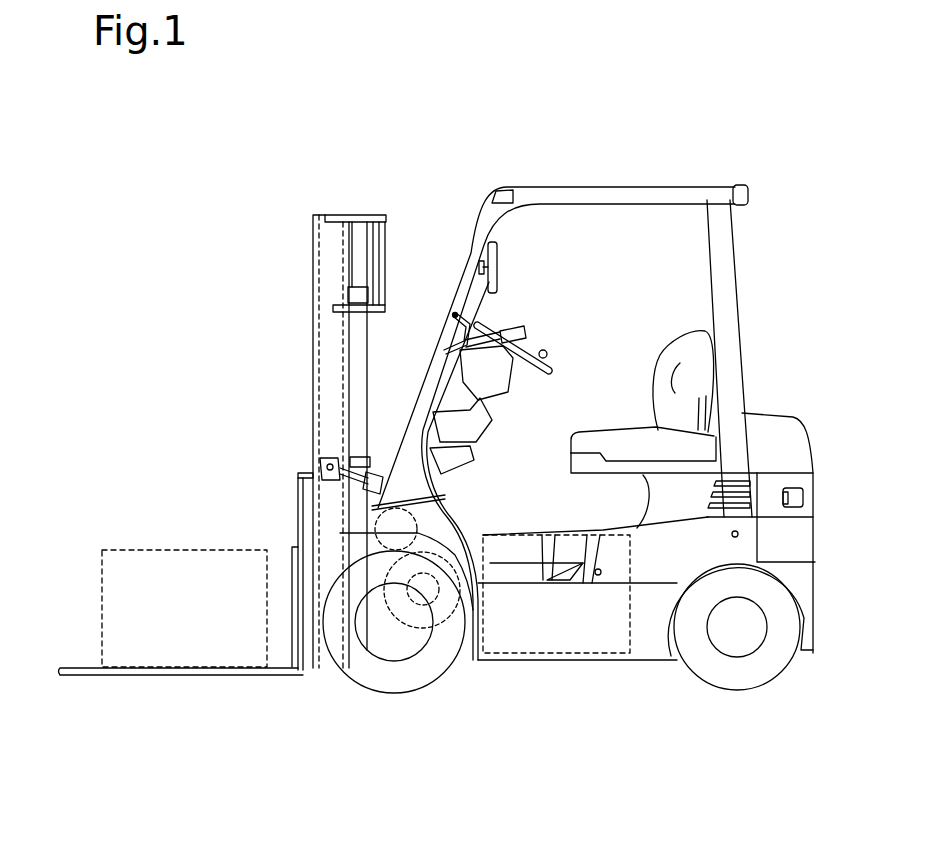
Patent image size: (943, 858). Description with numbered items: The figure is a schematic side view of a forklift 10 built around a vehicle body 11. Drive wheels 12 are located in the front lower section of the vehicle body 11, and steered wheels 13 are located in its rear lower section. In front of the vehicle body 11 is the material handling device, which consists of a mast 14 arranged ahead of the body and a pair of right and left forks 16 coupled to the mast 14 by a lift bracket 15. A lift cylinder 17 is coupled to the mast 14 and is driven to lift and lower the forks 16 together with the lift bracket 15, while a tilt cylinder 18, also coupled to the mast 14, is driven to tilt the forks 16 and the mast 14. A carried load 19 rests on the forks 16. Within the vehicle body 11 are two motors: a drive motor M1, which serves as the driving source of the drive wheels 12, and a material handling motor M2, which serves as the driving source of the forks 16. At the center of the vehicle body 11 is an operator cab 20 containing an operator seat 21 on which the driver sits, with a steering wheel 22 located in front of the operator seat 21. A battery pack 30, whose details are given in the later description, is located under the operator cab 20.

The forklift 10 is at (401, 171).
The vehicle body 11 is at (552, 684).
The drive wheels 12 is at (393, 694).
The steered wheels 13 is at (737, 690).
The mast 14 is at (299, 204).
The lift bracket 15 is at (310, 473).
The forks 16 is at (157, 667).
The lift cylinder 17 is at (360, 350).
The tilt cylinder 18 is at (381, 456).
The carried load 19 is at (203, 548).
The operator cab 20 is at (632, 268).
The operator seat 21 is at (675, 347).
The steering wheel 22 is at (550, 370).
The battery pack 30 is at (515, 535).
The drive motor M1 is at (447, 623).
The material handling motor M2 is at (412, 508).